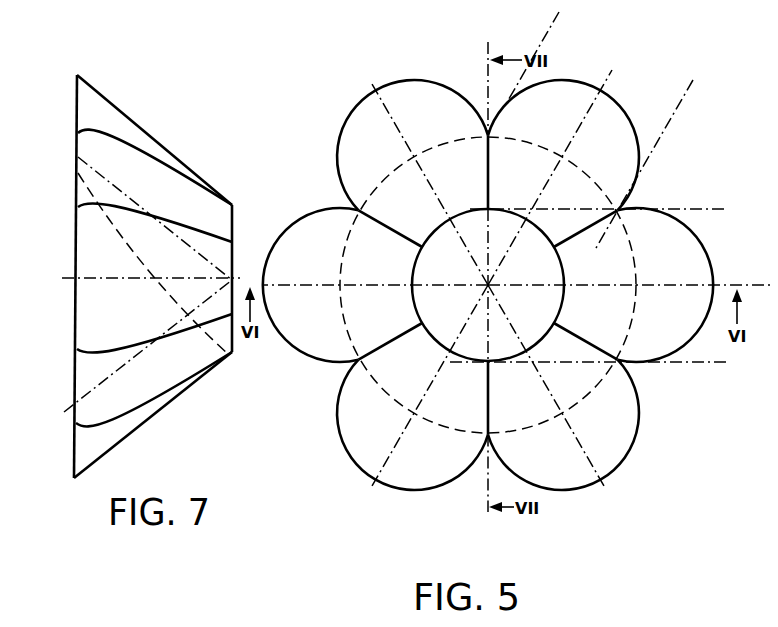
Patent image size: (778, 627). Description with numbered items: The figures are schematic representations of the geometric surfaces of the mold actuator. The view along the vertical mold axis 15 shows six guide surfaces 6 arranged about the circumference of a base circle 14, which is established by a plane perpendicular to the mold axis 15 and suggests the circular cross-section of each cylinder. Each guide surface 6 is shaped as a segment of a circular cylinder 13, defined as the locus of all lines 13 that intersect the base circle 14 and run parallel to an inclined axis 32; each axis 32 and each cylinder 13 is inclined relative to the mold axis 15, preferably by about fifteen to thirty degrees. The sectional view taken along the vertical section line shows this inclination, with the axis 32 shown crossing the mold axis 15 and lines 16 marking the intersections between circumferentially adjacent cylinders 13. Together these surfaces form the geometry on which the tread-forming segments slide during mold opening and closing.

In FIG. 5, the guide surface 6 is at (692, 231).
In FIG. 7, the guide surface 6 is at (75, 187).
In FIG. 5, the cylinder 13 is at (658, 146).
In FIG. 5, the base circle 14 is at (510, 207).
In FIG. 7, the base circle 14 is at (236, 243).
In FIG. 7, the mold axis 15 is at (68, 281).
In FIG. 7, the intersection line 16 is at (126, 133).
In FIG. 5, the axis 32 is at (266, 281).
In FIG. 7, the axis 32 is at (116, 189).